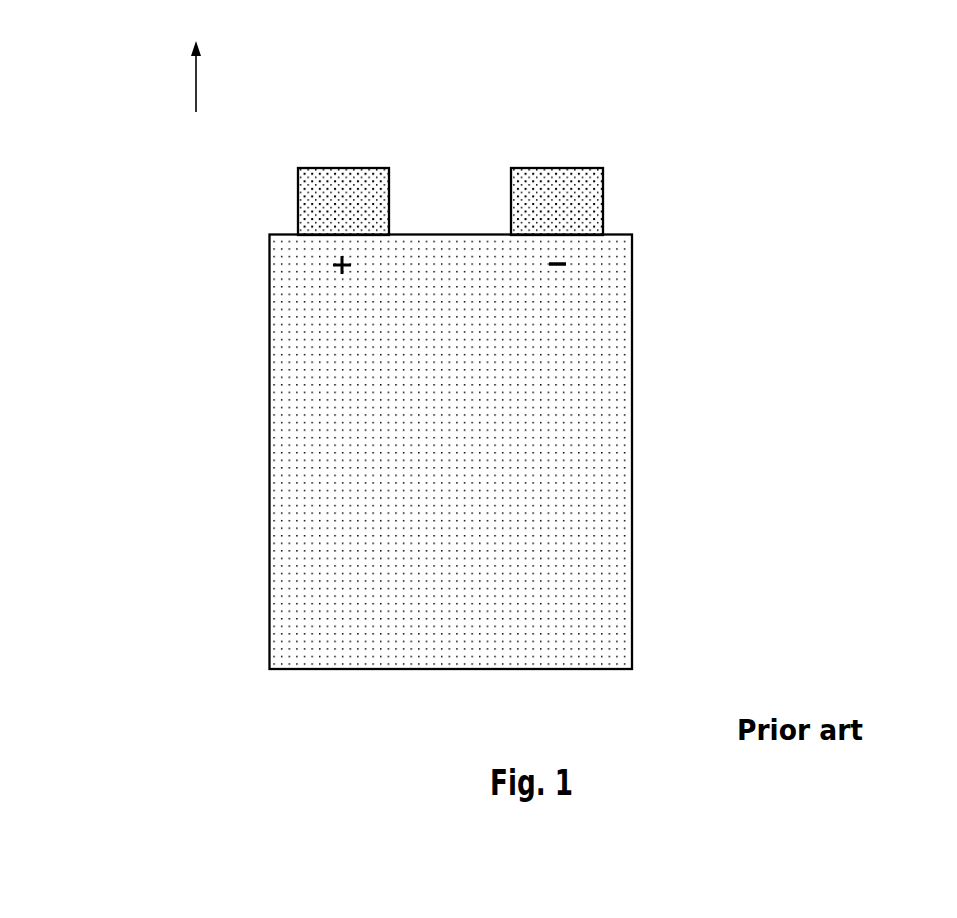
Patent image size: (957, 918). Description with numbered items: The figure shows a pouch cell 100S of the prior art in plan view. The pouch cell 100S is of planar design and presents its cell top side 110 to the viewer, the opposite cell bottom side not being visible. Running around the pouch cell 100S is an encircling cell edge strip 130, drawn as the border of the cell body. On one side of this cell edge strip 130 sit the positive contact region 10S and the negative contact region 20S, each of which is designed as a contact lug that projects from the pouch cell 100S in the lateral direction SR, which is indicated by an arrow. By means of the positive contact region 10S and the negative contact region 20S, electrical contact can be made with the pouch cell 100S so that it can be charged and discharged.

The pouch cell 100S is at (814, 232).
The cell top side 110 is at (313, 434).
The encircling cell edge strip 130 is at (452, 224).
The positive contact region 10S is at (377, 152).
The negative contact region 20S is at (596, 150).
The lateral direction SR is at (195, 80).